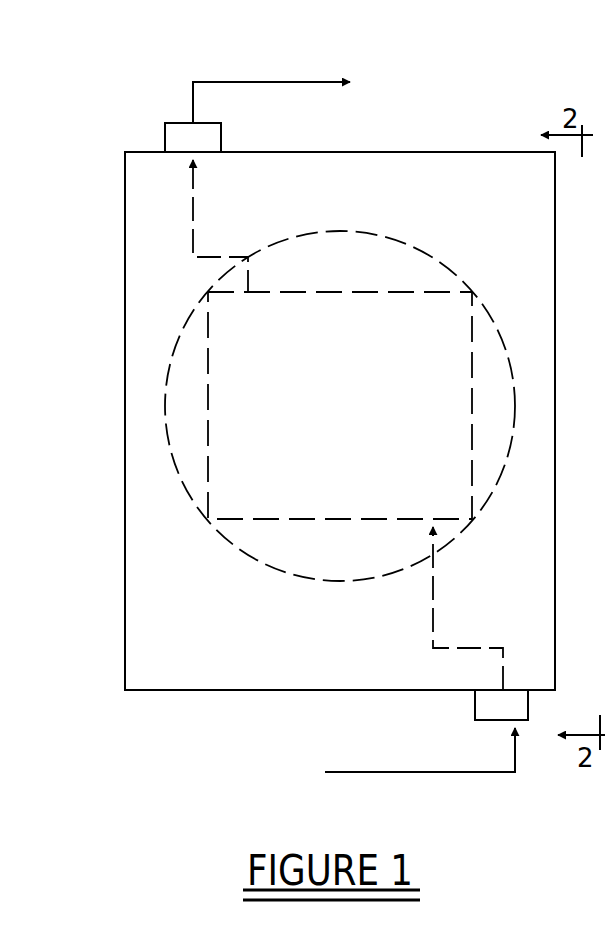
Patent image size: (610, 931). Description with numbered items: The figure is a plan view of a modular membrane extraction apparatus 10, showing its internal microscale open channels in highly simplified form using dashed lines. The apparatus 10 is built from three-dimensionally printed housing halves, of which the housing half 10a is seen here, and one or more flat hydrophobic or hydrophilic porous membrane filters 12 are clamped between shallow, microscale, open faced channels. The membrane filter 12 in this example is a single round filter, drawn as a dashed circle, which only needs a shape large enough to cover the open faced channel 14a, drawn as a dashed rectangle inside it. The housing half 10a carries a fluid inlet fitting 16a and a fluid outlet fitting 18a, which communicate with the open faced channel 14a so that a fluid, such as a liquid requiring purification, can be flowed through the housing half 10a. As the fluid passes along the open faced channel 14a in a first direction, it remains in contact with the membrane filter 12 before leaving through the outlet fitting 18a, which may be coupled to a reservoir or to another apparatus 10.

The modular membrane extraction apparatus 10 is at (303, 370).
The housing half 10a is at (152, 185).
The membrane filter 12 is at (287, 572).
The open faced channel 14a is at (208, 388).
The fluid inlet fitting 16a is at (486, 704).
The fluid outlet fitting 18a is at (175, 128).